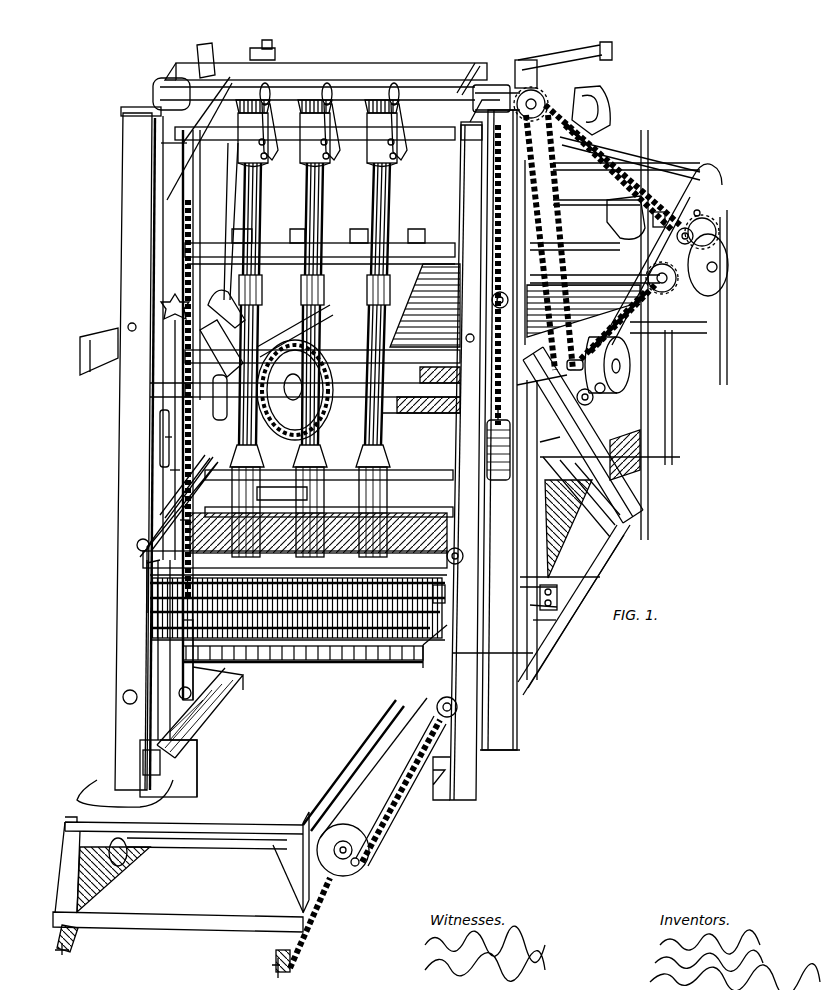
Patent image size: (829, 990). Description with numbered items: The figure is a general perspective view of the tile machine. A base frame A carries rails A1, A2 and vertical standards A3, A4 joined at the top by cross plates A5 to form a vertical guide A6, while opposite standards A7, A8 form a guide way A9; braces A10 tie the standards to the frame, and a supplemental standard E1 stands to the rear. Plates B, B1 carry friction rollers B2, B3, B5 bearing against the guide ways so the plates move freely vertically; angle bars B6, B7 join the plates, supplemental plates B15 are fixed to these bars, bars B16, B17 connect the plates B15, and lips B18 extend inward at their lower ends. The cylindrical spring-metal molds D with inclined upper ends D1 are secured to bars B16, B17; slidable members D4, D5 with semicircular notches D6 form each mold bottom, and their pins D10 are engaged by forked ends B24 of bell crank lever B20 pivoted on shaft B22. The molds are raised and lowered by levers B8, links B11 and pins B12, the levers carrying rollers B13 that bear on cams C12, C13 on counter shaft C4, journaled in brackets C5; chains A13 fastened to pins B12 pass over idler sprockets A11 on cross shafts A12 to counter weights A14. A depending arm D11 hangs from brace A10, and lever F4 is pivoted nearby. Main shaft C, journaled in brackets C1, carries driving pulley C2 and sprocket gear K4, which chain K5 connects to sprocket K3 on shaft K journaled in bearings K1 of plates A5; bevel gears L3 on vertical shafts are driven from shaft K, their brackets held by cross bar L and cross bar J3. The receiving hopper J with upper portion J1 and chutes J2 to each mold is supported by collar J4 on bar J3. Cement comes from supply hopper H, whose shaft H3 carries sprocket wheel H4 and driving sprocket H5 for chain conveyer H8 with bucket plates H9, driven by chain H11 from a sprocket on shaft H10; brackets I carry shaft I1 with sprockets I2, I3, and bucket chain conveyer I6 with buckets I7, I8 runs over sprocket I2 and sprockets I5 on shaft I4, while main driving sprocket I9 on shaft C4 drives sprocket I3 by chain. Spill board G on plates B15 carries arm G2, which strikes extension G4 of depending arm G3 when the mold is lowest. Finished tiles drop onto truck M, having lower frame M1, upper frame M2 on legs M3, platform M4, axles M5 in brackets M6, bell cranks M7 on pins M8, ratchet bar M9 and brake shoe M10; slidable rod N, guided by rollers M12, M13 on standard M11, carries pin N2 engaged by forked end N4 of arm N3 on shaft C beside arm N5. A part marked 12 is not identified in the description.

The base frame A is at (557, 597).
The rail A1 is at (67, 942).
The rail A2 is at (276, 962).
The vertical standard A3 is at (463, 788).
The vertical standard A4 is at (510, 738).
The cross plate A5 is at (480, 128).
The vertical guide A6 is at (533, 653).
The standard A7 is at (120, 767).
The standard A8 is at (173, 470).
The guide way A9 is at (123, 653).
The brace A10 is at (630, 510).
The idler sprocket A11 is at (165, 305).
The cross shaft A12 is at (163, 312).
The sprocket chain A13 is at (160, 412).
The counter weight A14 is at (163, 457).
The plate B is at (440, 670).
The plate B1 is at (156, 663).
The friction roller B2 is at (137, 547).
The friction roller B3 is at (123, 700).
The friction roller B5 is at (296, 608).
The angle bar B6 is at (147, 563).
The angle bar B7 is at (445, 506).
The lever B8 is at (197, 677).
The link B11 is at (190, 693).
The pin B12 is at (187, 520).
The roller B13 is at (452, 714).
The supplemental plate B15 is at (433, 663).
The bar B16 is at (343, 633).
The bar B17 is at (377, 655).
The lip B18 is at (420, 680).
The bell crank lever B20 is at (390, 660).
The shaft B22 is at (443, 593).
The forked end B24 is at (187, 665).
The main shaft C is at (583, 364).
The bracket C1 is at (233, 347).
The driving pulley C2 is at (623, 370).
The counter shaft C4 is at (615, 393).
The bracket C5 is at (592, 402).
The cam C12 is at (295, 390).
The cam C13 is at (547, 440).
The mold D is at (183, 377).
The inclined upper end D1 is at (390, 520).
The slidable member D4 is at (280, 633).
The slidable member D5 is at (407, 677).
The semi-circular notch D6 is at (303, 691).
The pin D10 is at (445, 600).
The depending arm D11 is at (220, 470).
The supplemental standard E1 is at (550, 612).
The lever F4 is at (618, 335).
The spill board G is at (333, 478).
The arm G2 is at (188, 478).
The depending arm G3 is at (175, 385).
The right angular extension G4 is at (165, 437).
The supply hopper H is at (707, 190).
The shaft H3 is at (620, 293).
The sprocket wheel H4 is at (680, 242).
The driving sprocket H5 is at (667, 293).
The chain conveyer H8 is at (600, 293).
The bucket plate H9 is at (722, 250).
The shaft H10 is at (728, 268).
The sprocket chain H11 is at (704, 207).
The bracket I is at (590, 83).
The shaft I1 is at (493, 73).
The sprocket I2 is at (523, 77).
The sprocket I3 is at (210, 62).
The shaft I4 is at (708, 222).
The gears I5 is at (670, 213).
The bucket chain conveyer I6 is at (617, 205).
The bucket I7 is at (608, 112).
The bucket I8 is at (660, 212).
The main driving sprocket I9 is at (226, 268).
The receiving hopper J is at (430, 77).
The main upper portion J1 is at (321, 134).
The chute J2 is at (425, 305).
The cross bar J3 is at (413, 230).
The collar J4 is at (433, 243).
The shaft K is at (367, 97).
The bearing K1 is at (168, 82).
The sprocket gear K3 is at (537, 92).
The sprocket gear K4 is at (535, 381).
The sprocket chain K5 is at (337, 88).
The cross bar L is at (183, 133).
The beveled gear L3 is at (392, 86).
The truck M is at (337, 768).
The main rectangular frame M1 is at (193, 923).
The upper rectangular frame M2 is at (200, 837).
The leg M3 is at (70, 867).
The platform M4 is at (167, 817).
The axle M5 is at (240, 850).
The bracket M6 is at (365, 848).
The bell crank M7 is at (352, 860).
The pin M8 is at (370, 862).
The ratchet bar M9 is at (385, 823).
The brake shoe M10 is at (303, 885).
The supplemental standard M11 is at (597, 553).
The guiding roller M12 is at (622, 505).
The guiding roller M13 is at (619, 528).
The slidable rod N is at (565, 578).
The pin N2 is at (557, 607).
The arm N3 is at (557, 587).
The forked end N4 is at (551, 635).
The arm N5 is at (290, 330).
The bracket 12 is at (113, 349).